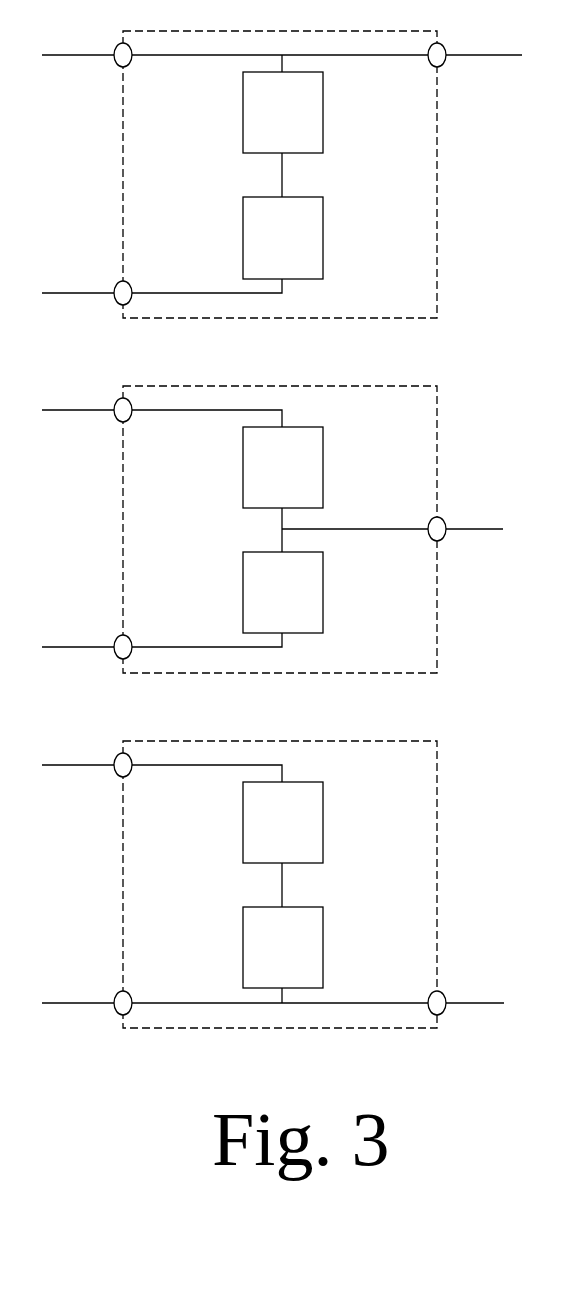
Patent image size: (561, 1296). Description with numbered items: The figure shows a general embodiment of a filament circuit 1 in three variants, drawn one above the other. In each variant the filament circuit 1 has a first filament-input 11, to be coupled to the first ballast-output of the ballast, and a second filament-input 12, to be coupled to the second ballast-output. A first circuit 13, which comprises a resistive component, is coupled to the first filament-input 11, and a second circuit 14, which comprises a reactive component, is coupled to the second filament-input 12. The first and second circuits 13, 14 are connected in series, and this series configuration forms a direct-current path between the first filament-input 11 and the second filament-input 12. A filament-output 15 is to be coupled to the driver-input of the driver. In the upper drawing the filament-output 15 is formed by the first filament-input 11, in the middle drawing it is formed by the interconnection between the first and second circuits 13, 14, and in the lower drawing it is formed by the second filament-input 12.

The filament circuit 1 is at (386, 318).
The first filament-input 11 is at (116, 63).
The second filament-input 12 is at (117, 282).
The first circuit 13 is at (323, 112).
The second circuit 14 is at (323, 236).
The filament-output 15 is at (444, 63).